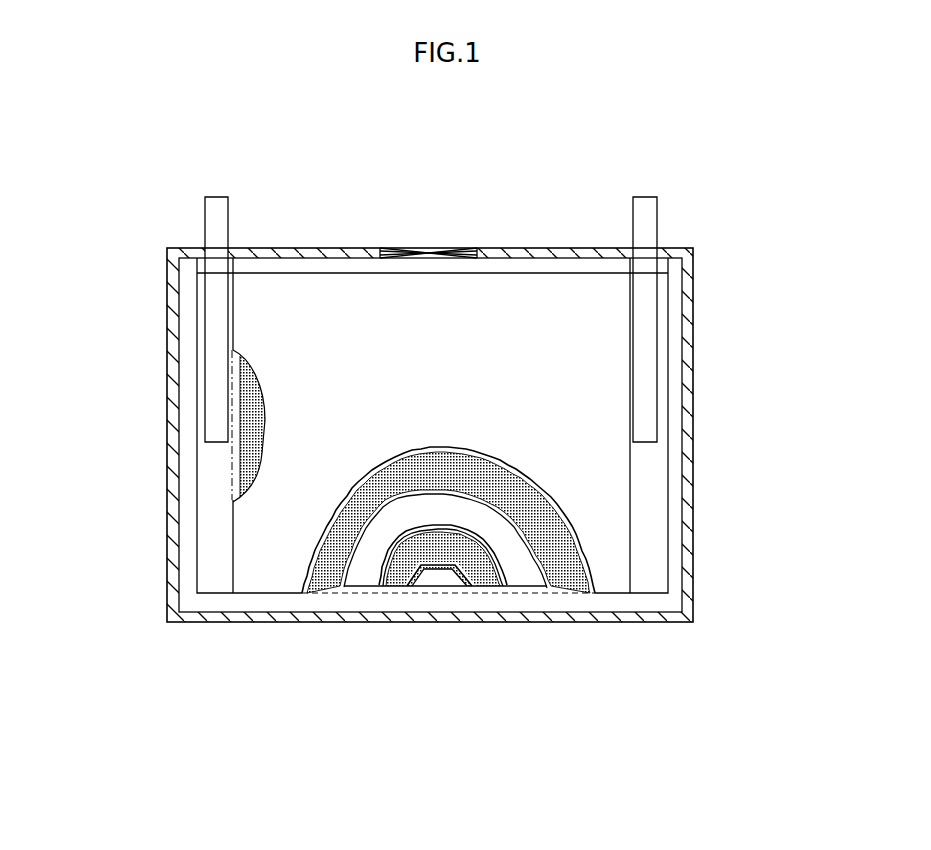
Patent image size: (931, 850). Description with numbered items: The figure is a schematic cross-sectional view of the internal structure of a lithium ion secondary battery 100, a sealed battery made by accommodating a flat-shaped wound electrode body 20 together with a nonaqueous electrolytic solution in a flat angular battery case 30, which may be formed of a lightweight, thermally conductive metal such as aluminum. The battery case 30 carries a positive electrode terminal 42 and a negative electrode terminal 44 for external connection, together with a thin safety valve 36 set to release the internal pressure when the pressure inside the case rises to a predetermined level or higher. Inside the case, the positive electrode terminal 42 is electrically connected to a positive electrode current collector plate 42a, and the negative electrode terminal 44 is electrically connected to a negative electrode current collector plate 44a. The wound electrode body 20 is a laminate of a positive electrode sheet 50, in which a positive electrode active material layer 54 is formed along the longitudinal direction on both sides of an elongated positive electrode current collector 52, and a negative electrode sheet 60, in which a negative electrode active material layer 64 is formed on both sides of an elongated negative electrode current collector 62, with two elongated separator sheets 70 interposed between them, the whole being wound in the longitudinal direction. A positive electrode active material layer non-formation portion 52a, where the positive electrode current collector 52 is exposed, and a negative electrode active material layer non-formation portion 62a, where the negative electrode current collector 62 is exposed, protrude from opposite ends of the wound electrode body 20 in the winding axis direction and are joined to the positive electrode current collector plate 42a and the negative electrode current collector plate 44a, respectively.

The lithium ion secondary battery 100 is at (695, 213).
The wound electrode body 20 is at (323, 302).
The battery case 30 is at (695, 350).
The safety valve 36 is at (433, 248).
The positive electrode terminal 42 is at (217, 203).
The positive electrode current collector plate 42a is at (217, 338).
The negative electrode terminal 44 is at (645, 203).
The negative electrode current collector plate 44a is at (645, 303).
The positive electrode sheet 50 is at (325, 577).
The positive electrode current collector 52 is at (195, 498).
The positive electrode active material layer non-formation portion 52a is at (210, 568).
The positive electrode active material layer 54 is at (253, 398).
The negative electrode sheet 60 is at (399, 575).
The negative electrode current collector 62 is at (663, 452).
The negative electrode active material layer non-formation portion 62a is at (655, 500).
The negative electrode active material layer 64 is at (438, 632).
The separator sheet 70 is at (268, 527).